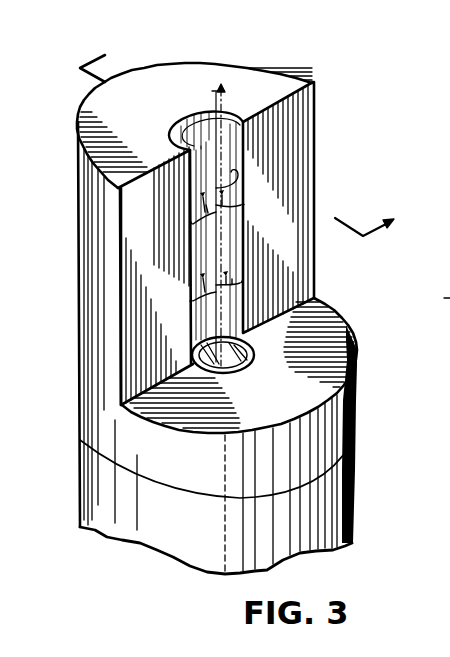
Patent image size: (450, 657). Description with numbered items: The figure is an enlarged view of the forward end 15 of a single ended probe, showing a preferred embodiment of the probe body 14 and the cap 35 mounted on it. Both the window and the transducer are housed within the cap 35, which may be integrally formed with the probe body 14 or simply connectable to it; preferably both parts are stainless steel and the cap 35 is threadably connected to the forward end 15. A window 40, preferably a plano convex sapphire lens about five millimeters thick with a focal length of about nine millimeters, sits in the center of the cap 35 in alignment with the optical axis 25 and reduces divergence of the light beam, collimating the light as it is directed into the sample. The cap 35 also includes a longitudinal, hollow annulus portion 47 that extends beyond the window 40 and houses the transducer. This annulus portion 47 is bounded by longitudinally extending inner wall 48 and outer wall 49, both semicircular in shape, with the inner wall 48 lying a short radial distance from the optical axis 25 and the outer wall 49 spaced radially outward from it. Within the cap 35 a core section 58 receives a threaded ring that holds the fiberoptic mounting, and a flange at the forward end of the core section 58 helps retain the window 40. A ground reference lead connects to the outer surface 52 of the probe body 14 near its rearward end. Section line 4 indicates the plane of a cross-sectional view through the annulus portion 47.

The section line 4- 4 is at (226, 153).
The probe body 14 is at (88, 495).
The forward end 15 is at (365, 422).
The optical axis 25 is at (221, 95).
The cap 35 is at (74, 428).
The window 40 is at (245, 350).
The annulus portion 47 is at (385, 75).
The inner wall 48 is at (236, 182).
The outer wall 49 is at (85, 224).
The outer surface 52 is at (348, 462).
The core section 58 is at (433, 301).